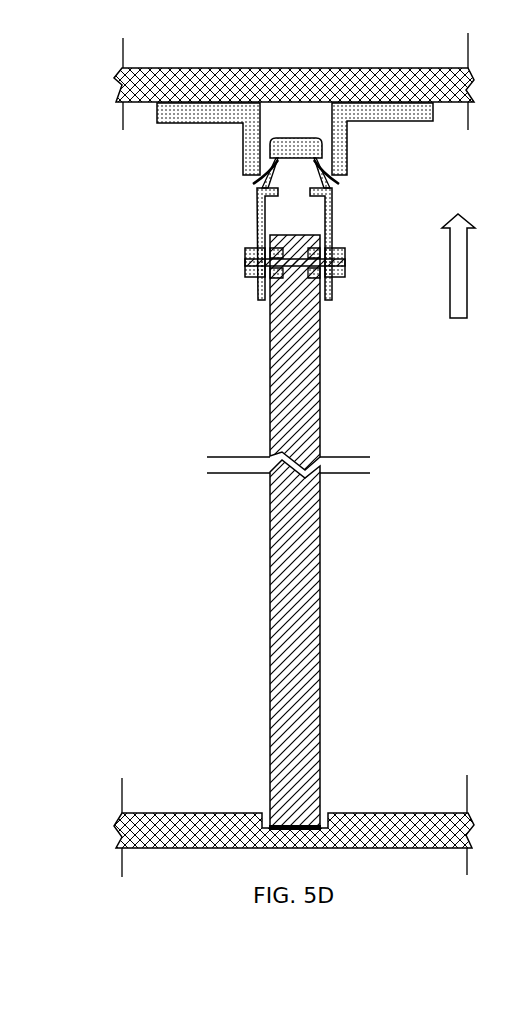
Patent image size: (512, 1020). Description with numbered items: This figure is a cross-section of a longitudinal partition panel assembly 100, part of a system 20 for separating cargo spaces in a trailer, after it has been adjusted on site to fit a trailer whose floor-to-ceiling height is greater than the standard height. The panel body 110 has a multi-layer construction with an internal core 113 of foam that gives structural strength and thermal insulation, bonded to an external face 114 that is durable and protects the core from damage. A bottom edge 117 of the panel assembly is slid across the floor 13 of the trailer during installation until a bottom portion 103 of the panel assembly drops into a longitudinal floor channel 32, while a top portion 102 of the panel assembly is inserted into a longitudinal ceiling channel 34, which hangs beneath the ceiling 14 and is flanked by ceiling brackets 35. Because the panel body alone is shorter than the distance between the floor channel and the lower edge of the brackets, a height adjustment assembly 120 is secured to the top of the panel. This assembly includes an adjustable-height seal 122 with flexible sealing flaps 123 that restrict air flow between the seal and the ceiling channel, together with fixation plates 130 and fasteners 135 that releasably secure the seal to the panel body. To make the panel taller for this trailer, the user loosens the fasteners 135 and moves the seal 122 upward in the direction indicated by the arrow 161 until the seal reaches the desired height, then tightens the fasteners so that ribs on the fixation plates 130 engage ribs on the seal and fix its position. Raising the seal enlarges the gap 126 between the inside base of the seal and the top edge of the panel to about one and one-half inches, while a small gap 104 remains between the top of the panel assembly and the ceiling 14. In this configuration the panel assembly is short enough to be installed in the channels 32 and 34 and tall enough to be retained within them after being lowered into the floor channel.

The floor 13 is at (216, 831).
The ceiling 14 is at (327, 68).
The system 20 is at (95, 66).
The longitudinal floor channel 32 is at (258, 802).
The longitudinal ceiling channel 34 is at (382, 153).
The ceiling brackets 35 is at (381, 113).
The longitudinal partition panel assembly 100 is at (102, 183).
The top portion 102 is at (247, 189).
The bottom portion 103 is at (333, 792).
The gap 104 is at (290, 120).
The panel body 110 is at (240, 531).
The internal core 113 is at (292, 584).
The external face 114 is at (270, 643).
The bottom edge 117 is at (291, 848).
The height adjustment assembly 120 is at (250, 232).
The adjustable-height seal 122 is at (252, 196).
The flexible sealing flaps 123 is at (338, 184).
The gap 126 is at (295, 228).
The fixation plates 130 is at (251, 283).
The fasteners 135 is at (346, 264).
The arrow 161 is at (450, 300).